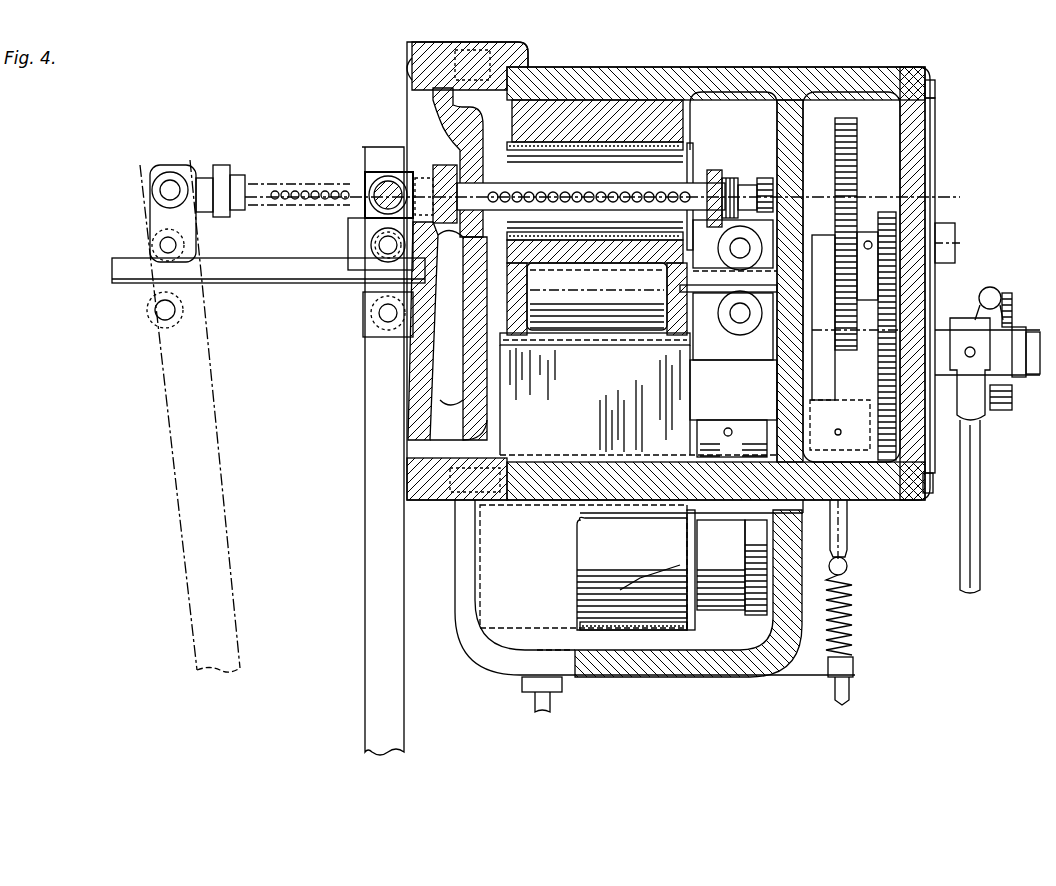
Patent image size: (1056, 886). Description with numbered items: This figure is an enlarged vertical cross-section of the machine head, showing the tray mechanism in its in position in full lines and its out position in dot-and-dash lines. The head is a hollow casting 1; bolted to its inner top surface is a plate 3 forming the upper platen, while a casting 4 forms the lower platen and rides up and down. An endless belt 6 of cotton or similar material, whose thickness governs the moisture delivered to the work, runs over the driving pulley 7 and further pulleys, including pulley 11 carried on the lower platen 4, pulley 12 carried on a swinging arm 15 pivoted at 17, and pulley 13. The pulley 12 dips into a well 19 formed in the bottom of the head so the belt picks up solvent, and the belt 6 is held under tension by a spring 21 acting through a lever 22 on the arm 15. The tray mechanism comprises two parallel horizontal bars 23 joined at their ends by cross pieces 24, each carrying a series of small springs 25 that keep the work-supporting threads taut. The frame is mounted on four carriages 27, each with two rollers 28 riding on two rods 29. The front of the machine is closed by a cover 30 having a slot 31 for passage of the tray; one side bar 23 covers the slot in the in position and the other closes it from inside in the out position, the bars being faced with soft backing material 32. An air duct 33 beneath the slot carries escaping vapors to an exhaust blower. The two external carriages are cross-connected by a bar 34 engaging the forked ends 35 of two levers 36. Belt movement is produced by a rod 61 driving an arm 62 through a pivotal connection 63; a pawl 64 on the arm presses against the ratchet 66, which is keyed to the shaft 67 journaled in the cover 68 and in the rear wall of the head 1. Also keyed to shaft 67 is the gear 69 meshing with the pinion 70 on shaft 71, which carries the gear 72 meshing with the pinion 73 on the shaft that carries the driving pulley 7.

The hollow casting 1 is at (583, 78).
The plate 3 is at (688, 112).
The casting 4 is at (588, 262).
The endless belt 6 is at (513, 128).
The driving pulley 7 is at (690, 190).
The pulley 11 is at (573, 313).
The pulley 12 is at (672, 628).
The pulley 13 is at (484, 432).
The swinging arm 15 is at (720, 600).
The pivot 17 is at (738, 405).
The well 19 is at (632, 672).
The spring 21 is at (852, 612).
The lever 22 is at (848, 528).
The horizontal bar 23 is at (222, 168).
The cross piece 24 is at (596, 197).
The small spring 25 is at (296, 190).
The carriage 27 is at (735, 300).
The roller 28 is at (368, 236).
The rod 29 is at (120, 288).
The cover 30 is at (418, 377).
The slot 31 is at (484, 160).
The soft backing material 32 is at (538, 238).
The air duct 33 is at (440, 400).
The bar 34 is at (388, 178).
The forked end 35 is at (138, 188).
The lever 36 is at (180, 488).
The rod 61 is at (972, 505).
The arm 62 is at (968, 320).
The pivotal connection 63 is at (1030, 328).
The pawl 64 is at (992, 287).
The ratchet 66 is at (1010, 295).
The shaft 67 is at (1012, 398).
The cover 68 is at (928, 142).
The gear 69 is at (905, 448).
The pinion 70 is at (886, 212).
The shaft 71 is at (955, 245).
The gear 72 is at (856, 134).
The pinion 73 is at (866, 285).